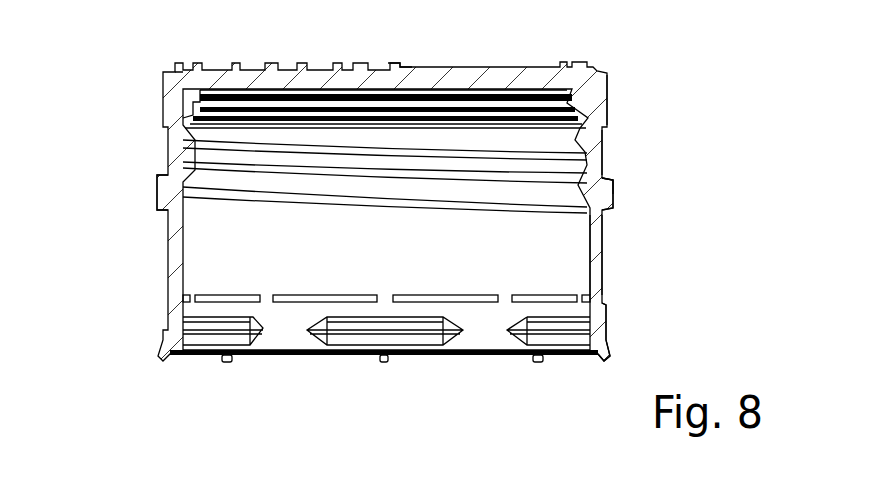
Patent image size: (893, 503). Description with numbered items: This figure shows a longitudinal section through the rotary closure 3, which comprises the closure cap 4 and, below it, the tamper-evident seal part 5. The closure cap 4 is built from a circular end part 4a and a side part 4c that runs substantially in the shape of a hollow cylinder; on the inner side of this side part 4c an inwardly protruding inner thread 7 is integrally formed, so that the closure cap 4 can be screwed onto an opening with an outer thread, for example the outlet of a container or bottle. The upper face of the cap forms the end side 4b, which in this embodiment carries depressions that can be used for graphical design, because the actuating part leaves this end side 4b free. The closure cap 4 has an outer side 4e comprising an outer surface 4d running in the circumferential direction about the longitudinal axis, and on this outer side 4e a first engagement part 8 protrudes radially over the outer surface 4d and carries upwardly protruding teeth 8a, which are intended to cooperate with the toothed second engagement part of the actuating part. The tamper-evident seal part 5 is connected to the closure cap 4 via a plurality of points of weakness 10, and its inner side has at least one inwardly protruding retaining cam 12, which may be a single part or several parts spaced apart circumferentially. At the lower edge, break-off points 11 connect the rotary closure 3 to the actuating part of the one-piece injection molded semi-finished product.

The rotary closure 3 is at (634, 53).
The closure cap 4 is at (97, 65).
The circular end part 4a is at (466, 78).
The end side 4b is at (398, 50).
The side part 4c is at (600, 148).
The outer surface 4d is at (618, 247).
The outer side 4e is at (620, 101).
The tamper-evident seal part 5 is at (604, 330).
The inner thread 7 is at (542, 143).
The first engagement part 8 is at (162, 184).
The teeth 8a is at (614, 181).
The points of weakness 10 is at (265, 300).
The break-off points 11 is at (229, 363).
The retaining cam 12 is at (410, 338).